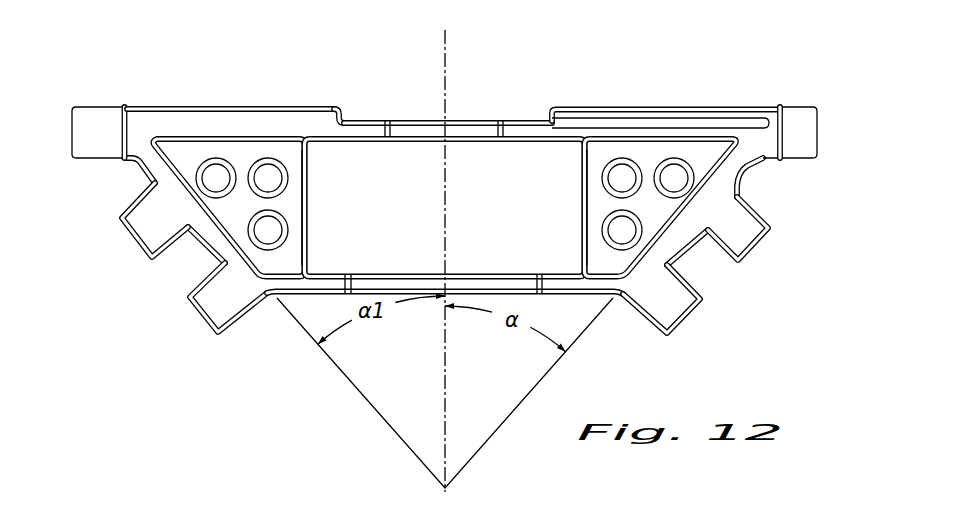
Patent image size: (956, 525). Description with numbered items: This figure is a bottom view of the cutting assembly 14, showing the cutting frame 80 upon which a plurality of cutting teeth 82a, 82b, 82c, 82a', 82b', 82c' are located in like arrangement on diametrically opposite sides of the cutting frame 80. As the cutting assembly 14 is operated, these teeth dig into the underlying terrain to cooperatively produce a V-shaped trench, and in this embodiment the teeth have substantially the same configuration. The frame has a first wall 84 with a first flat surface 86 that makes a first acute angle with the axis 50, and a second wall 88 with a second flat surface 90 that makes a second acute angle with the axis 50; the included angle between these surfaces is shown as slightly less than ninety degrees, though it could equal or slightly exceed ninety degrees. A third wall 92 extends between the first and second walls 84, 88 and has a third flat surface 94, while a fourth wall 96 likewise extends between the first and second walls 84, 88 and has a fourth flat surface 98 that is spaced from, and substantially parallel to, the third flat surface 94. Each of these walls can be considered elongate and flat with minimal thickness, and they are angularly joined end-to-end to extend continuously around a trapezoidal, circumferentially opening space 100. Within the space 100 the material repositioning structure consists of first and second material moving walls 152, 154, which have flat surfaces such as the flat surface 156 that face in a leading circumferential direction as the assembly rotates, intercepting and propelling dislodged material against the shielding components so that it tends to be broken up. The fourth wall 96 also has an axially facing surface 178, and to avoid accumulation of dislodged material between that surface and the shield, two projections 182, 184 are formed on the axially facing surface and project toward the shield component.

The cutting assembly 14 is at (690, 98).
The axis 50 is at (447, 86).
The cutting frame 80 is at (338, 117).
The cutting tooth 82a' is at (104, 100).
The cutting tooth 82a is at (811, 172).
The cutting tooth 82b' is at (140, 245).
The cutting tooth 82c' is at (209, 317).
The cutting tooth 82b is at (775, 249).
The cutting tooth 82c is at (707, 308).
The first wall 84 is at (700, 173).
The first flat surface 86 is at (636, 172).
The second wall 88 is at (173, 165).
The second flat surface 90 is at (233, 213).
The third wall 92 is at (325, 292).
The third flat surface 94 is at (382, 274).
The fourth wall 96 is at (410, 133).
The fourth flat surface 98 is at (532, 142).
The trapezoidal circumferentially opening space 100 is at (553, 262).
The first material moving wall 152 is at (245, 157).
The second material moving wall 154 is at (647, 160).
The flat surface 156 is at (285, 202).
The axially facing surface 178 is at (525, 122).
The projection 182 is at (183, 108).
The projection 184 is at (627, 110).